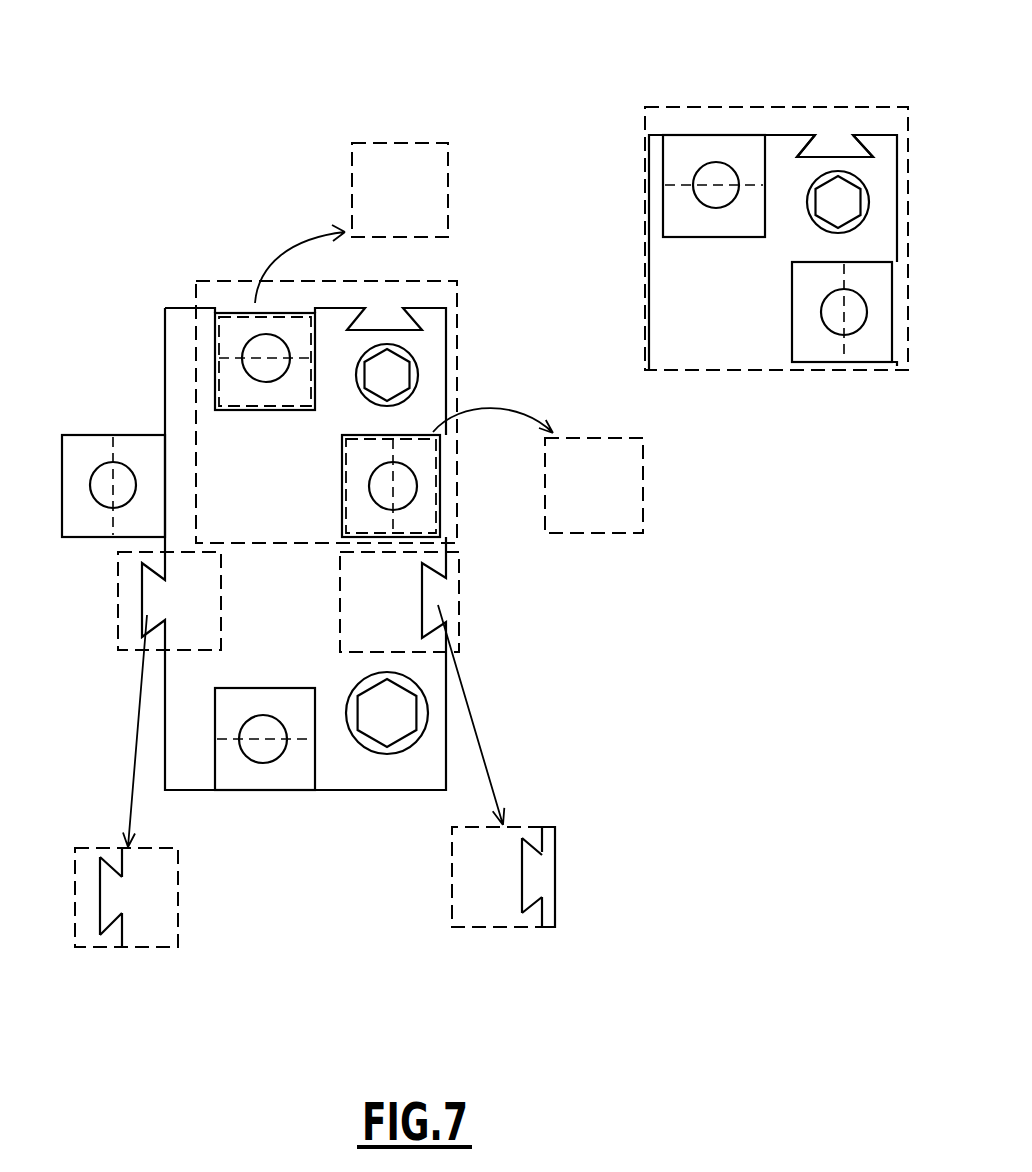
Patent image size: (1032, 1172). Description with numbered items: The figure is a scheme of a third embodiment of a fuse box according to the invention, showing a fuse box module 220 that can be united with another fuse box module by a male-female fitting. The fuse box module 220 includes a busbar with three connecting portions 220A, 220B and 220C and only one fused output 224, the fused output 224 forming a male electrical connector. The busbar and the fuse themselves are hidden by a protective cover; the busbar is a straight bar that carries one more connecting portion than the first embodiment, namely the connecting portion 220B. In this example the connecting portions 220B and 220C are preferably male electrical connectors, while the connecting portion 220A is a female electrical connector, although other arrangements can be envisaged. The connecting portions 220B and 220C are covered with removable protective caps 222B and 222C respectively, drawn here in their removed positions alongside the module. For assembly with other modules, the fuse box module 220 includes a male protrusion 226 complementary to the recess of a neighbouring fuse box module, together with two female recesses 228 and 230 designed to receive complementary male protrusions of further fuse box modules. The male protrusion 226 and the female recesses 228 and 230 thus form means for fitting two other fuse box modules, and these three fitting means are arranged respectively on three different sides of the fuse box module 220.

The fuse box module 220 is at (145, 160).
The connecting portion 220A is at (87, 460).
The connecting portion 220B is at (693, 157).
The connecting portion 220C is at (868, 343).
The protective cap 222B is at (405, 170).
The protective cap 222C is at (617, 497).
The fused output 224 is at (287, 772).
The male protrusion 226 is at (110, 895).
The female recess 228 is at (545, 872).
The female recess 230 is at (836, 130).